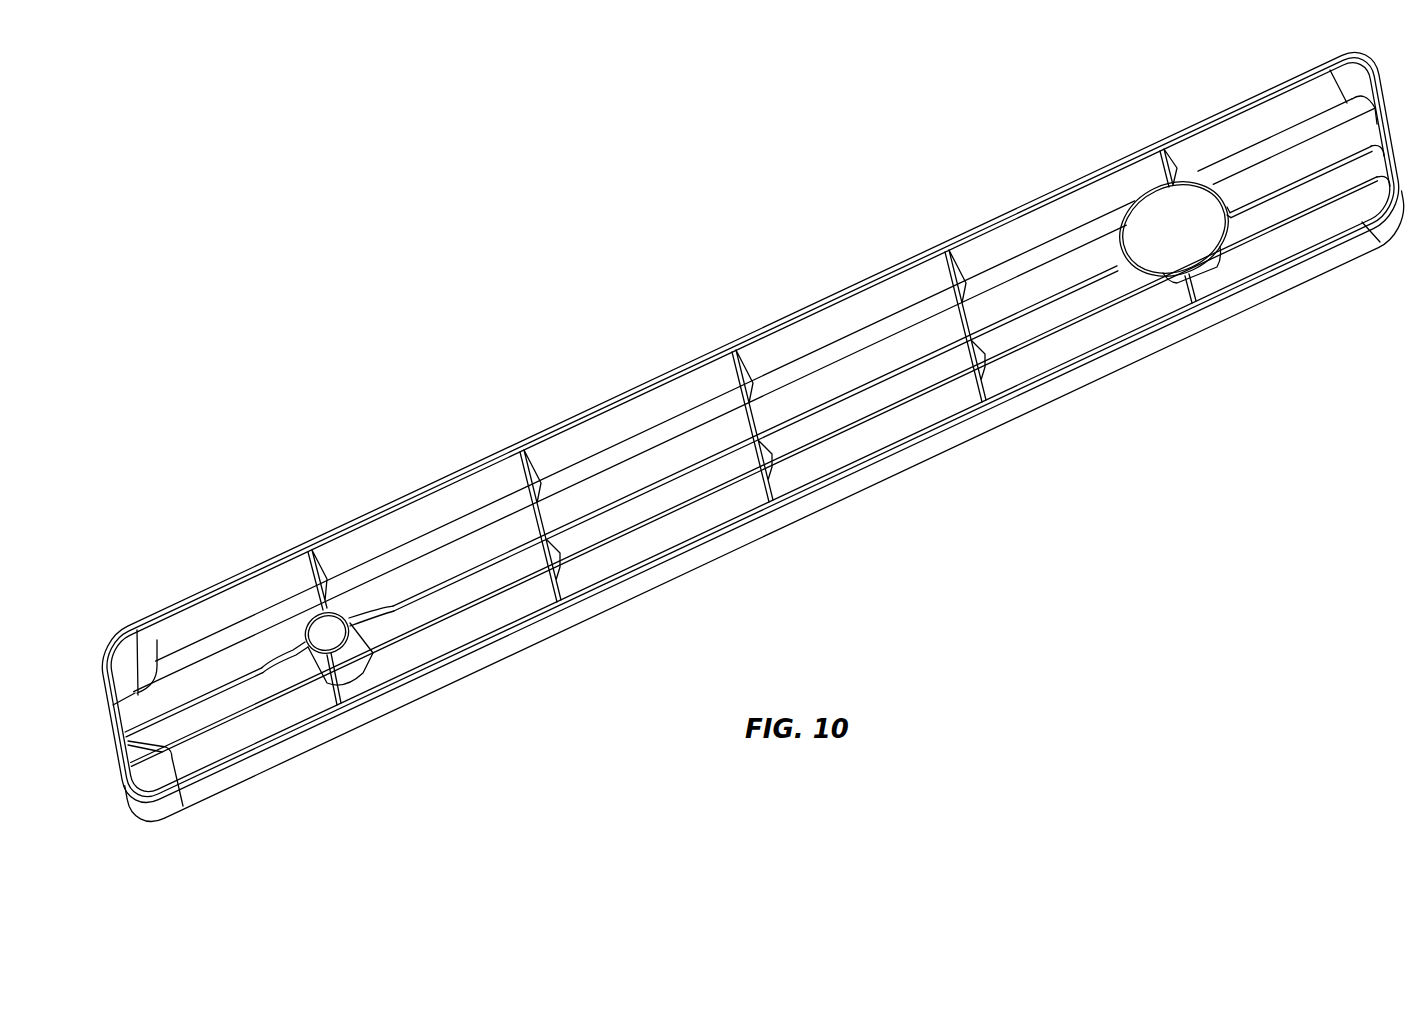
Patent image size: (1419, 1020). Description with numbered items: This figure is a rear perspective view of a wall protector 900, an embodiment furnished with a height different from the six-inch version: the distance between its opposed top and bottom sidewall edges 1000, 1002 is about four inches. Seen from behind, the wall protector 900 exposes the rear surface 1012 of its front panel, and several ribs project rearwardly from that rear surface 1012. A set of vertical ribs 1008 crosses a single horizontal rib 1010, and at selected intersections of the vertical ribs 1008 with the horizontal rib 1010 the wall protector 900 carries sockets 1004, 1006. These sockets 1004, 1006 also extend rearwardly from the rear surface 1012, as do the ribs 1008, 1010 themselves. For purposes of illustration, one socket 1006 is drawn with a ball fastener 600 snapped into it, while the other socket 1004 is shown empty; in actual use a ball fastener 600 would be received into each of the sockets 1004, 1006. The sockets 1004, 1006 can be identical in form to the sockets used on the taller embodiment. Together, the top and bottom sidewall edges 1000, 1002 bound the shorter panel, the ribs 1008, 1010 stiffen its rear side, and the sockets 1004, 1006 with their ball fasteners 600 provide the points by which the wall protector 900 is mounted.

The wall protector 900 is at (755, 252).
The top sidewall edge 1000 is at (641, 381).
The bottom sidewall edge 1002 is at (805, 495).
The socket 1004 is at (357, 660).
The socket 1006 is at (1210, 262).
The vertical ribs 1008 is at (1160, 180).
The horizontal rib 1010 is at (600, 530).
The rear surface 1012 is at (448, 543).
The ball fastener 600 is at (1163, 250).